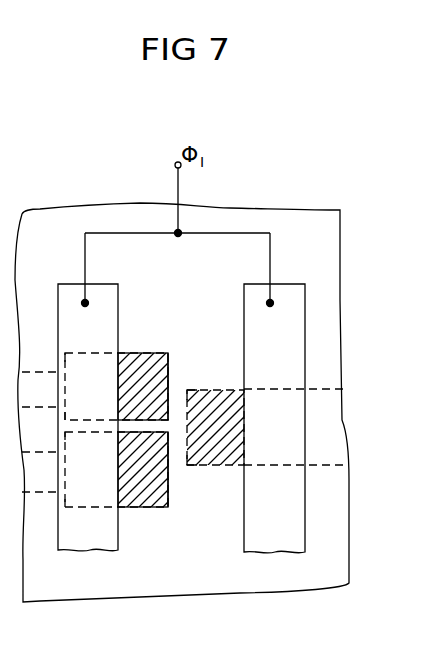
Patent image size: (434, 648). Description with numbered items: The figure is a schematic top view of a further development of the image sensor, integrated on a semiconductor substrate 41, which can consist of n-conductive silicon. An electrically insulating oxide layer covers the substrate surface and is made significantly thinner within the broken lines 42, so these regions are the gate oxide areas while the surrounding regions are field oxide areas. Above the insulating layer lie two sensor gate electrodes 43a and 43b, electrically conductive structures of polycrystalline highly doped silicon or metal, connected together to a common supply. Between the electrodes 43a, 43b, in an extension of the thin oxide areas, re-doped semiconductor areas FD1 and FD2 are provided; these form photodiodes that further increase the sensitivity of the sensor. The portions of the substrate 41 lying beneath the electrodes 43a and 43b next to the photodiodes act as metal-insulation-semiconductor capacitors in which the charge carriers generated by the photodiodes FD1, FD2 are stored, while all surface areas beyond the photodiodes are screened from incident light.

The semiconductor substrate 41 is at (320, 268).
The broken lines 42 is at (202, 390).
The sensor gate electrode 43a is at (100, 545).
The sensor gate electrode 43b is at (270, 535).
The re-doped semiconductor area FD1 is at (150, 496).
The re-doped semiconductor area FD2 is at (210, 468).